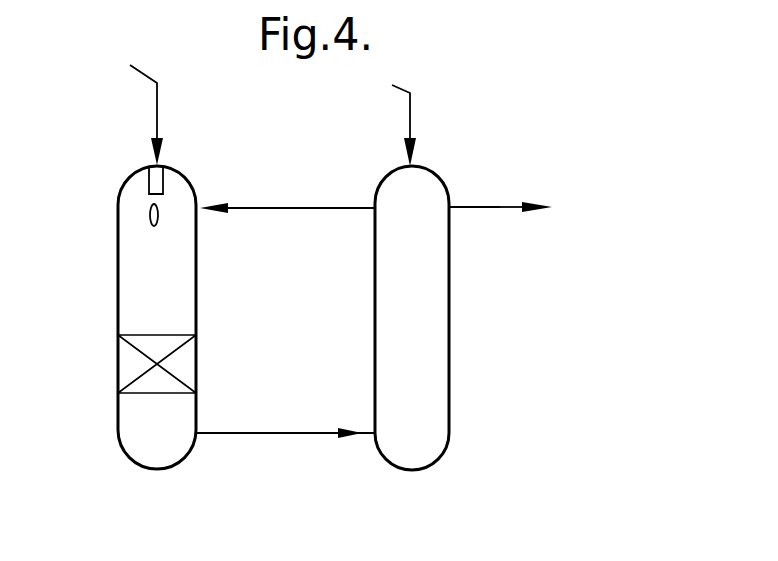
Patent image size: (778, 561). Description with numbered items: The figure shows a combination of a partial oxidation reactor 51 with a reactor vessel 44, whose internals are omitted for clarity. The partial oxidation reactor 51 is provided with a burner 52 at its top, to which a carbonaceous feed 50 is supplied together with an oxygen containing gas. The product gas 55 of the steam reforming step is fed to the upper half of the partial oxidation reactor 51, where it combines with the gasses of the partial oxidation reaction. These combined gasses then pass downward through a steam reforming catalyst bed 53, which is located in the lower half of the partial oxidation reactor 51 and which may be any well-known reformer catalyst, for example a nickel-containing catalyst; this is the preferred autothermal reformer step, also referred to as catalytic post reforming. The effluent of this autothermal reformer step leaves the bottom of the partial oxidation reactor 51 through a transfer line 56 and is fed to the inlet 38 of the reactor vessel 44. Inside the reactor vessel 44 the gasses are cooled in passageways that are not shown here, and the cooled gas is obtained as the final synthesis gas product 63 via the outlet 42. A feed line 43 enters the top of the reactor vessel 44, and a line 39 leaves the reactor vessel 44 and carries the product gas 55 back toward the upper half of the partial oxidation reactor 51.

The inlet 38 is at (357, 433).
The line from second vessel 39 is at (360, 208).
The outlet 42 is at (492, 210).
The feed line to second vessel 43 is at (410, 115).
The reactor vessel 44 is at (430, 329).
The carbonaceous feed 50 is at (156, 112).
The partial oxidation reactor 51 is at (172, 306).
The burner 52 is at (149, 190).
The steam reforming catalyst bed 53 is at (125, 365).
The product gas 55 is at (278, 208).
The bottom transfer line 56 is at (260, 433).
The final synthesis gas product 63 is at (546, 207).